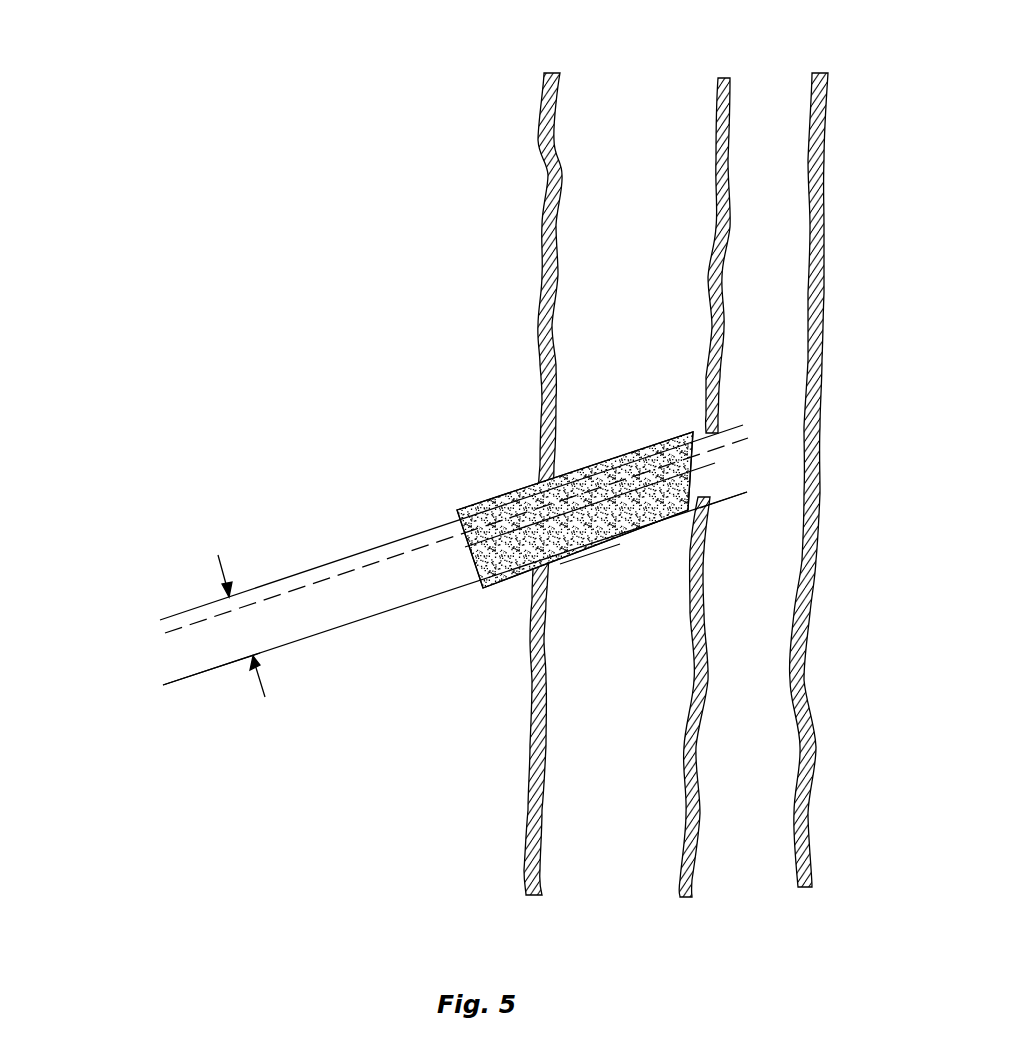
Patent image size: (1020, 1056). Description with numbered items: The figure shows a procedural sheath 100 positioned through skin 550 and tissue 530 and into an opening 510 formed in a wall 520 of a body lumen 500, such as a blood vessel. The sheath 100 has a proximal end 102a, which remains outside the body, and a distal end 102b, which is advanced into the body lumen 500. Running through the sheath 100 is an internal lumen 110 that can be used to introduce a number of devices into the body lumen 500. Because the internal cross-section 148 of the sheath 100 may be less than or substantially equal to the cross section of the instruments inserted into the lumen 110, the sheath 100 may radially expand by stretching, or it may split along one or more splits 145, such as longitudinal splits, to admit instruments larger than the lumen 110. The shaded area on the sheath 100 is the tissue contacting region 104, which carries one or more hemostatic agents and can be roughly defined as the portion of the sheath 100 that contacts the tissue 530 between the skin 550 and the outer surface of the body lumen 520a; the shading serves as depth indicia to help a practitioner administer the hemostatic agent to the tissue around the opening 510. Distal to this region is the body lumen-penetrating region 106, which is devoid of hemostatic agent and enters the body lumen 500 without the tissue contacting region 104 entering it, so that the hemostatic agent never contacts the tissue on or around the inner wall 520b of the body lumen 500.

The procedural sheath 100 is at (484, 561).
The proximal end 102a is at (200, 673).
The distal end 102b is at (730, 502).
The tissue contacting region 104 is at (590, 549).
The body lumen-penetrating region 106 is at (730, 424).
The internal lumen 110 is at (167, 656).
The split 145 is at (348, 572).
The internal cross-section 148 is at (241, 626).
The body lumen 500 is at (634, 458).
The opening 510 is at (462, 546).
The wall 520 is at (585, 458).
The outer surface of the body lumen 520a is at (706, 412).
The inner wall of the body lumen 520b is at (700, 617).
The tissue 530 is at (613, 207).
The skin 550 is at (520, 803).